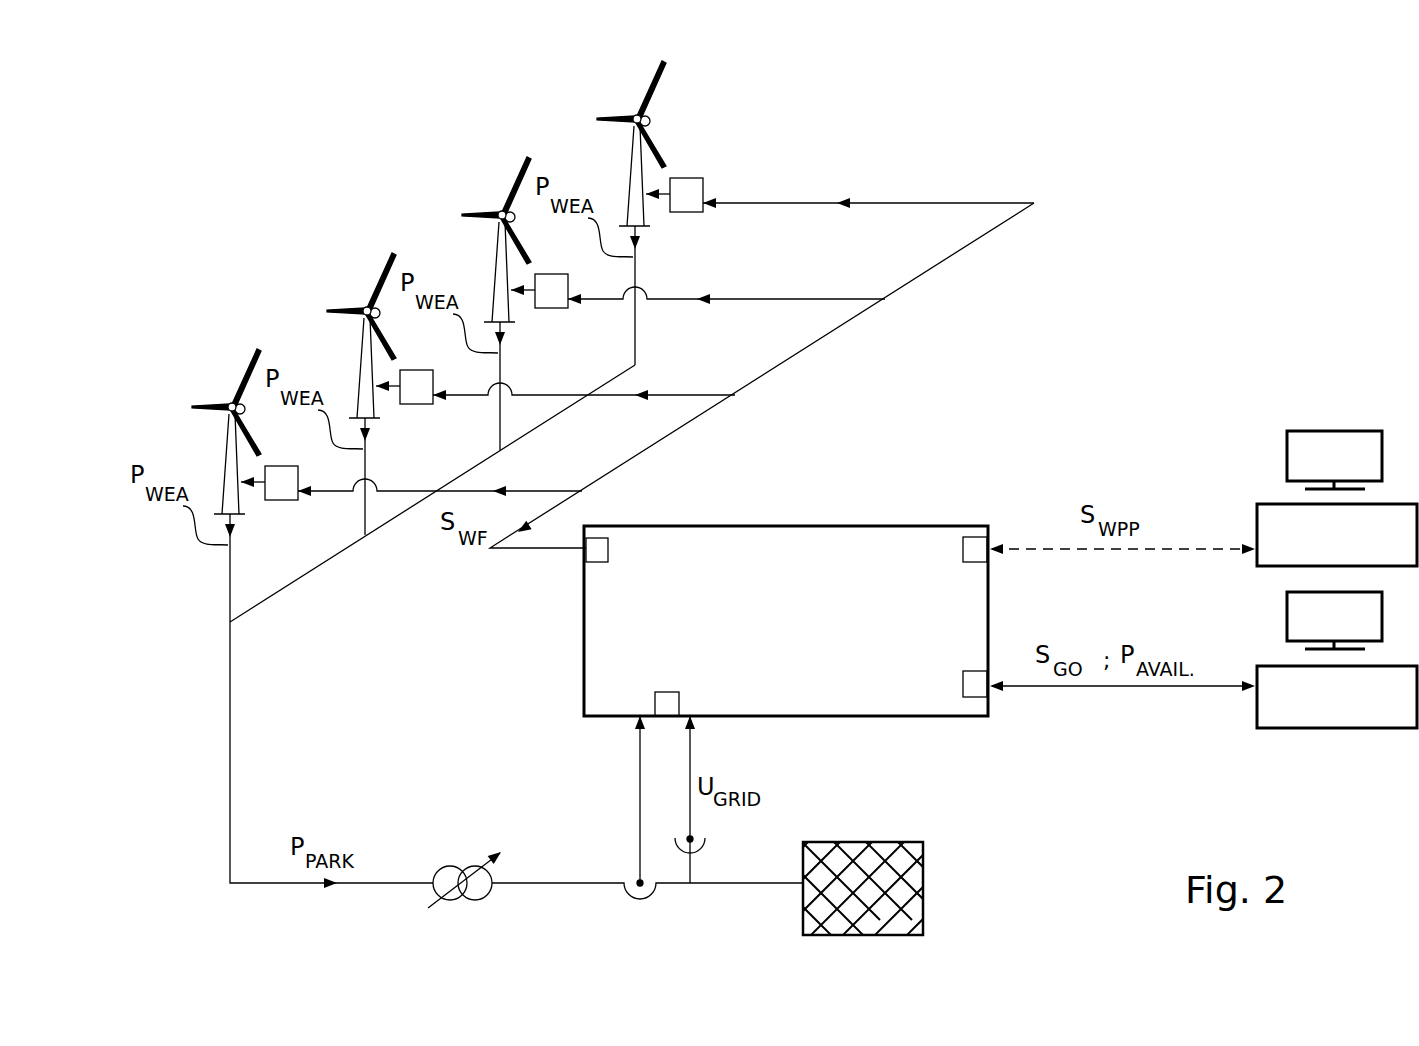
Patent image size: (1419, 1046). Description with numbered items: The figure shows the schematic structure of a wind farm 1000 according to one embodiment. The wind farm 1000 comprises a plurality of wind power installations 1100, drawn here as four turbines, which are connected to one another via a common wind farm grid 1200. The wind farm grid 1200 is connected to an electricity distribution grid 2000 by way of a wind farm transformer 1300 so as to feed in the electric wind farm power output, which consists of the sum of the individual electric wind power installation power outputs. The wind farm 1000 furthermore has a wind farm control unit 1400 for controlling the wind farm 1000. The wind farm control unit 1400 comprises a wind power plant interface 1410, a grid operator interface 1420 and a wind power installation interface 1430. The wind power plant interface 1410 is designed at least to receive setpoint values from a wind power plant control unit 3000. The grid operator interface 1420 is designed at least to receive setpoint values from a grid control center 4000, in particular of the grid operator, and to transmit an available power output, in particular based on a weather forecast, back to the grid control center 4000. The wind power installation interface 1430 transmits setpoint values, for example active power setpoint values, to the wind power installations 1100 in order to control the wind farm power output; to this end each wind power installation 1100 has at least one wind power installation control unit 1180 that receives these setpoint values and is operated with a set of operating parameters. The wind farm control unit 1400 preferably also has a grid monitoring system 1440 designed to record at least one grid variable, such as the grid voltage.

The wind farm 1000 is at (1218, 222).
The wind power installation 1100 is at (392, 341).
The wind power installation control unit 1180 is at (469, 377).
The wind farm grid 1200 is at (228, 728).
The wind farm transformer 1300 is at (450, 866).
The wind farm control unit 1400 is at (822, 639).
The wind power plant interface 1410 is at (970, 551).
The grid operator interface 1420 is at (975, 690).
The wind power installation interface 1430 is at (597, 549).
The grid monitoring system 1440 is at (665, 700).
The electricity distribution grid 2000 is at (865, 842).
The wind power plant control unit 3000 is at (1361, 553).
The grid control center 4000 is at (1361, 715).